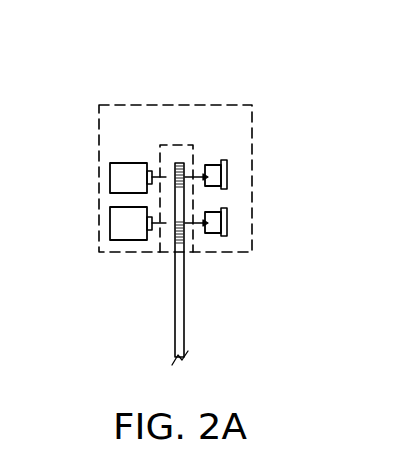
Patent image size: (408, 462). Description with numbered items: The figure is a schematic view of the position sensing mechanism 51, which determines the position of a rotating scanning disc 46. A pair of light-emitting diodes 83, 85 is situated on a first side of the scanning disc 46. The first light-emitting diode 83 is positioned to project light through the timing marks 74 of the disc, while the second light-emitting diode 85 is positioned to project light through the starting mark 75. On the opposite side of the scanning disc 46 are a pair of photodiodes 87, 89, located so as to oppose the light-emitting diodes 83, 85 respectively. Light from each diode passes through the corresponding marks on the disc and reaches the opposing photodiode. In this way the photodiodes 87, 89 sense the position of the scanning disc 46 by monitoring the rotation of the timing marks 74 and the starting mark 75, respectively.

The position sensing mechanism 51 is at (183, 115).
The light-emitting diode 83 is at (130, 172).
The light-emitting diode 85 is at (118, 221).
The photodiode 87 is at (217, 164).
The photodiode 89 is at (215, 243).
The timing marks 74 is at (188, 170).
The starting mark 75 is at (172, 232).
The scanning disc 46 is at (186, 335).